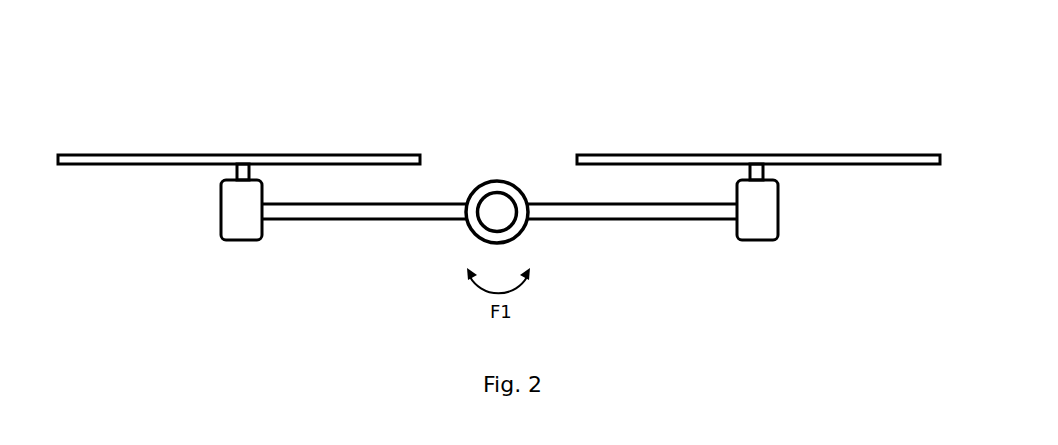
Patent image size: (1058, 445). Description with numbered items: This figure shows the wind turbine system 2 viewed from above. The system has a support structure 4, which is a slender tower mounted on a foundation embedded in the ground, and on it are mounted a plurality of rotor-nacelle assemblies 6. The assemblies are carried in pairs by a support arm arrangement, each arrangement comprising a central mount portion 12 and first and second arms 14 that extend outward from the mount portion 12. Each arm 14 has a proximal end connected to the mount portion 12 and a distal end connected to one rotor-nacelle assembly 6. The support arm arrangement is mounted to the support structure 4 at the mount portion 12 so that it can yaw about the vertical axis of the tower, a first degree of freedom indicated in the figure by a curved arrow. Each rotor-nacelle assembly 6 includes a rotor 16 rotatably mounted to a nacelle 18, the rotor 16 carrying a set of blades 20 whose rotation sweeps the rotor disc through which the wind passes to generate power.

The wind turbine system 2 is at (890, 85).
The support structure 4 is at (510, 198).
The rotor-nacelle assembly 6 is at (317, 128).
The mount portion 12 is at (478, 193).
The support arm 14 is at (337, 210).
The rotor 16 is at (233, 170).
The nacelle 18 is at (255, 241).
The blade 20 is at (97, 165).